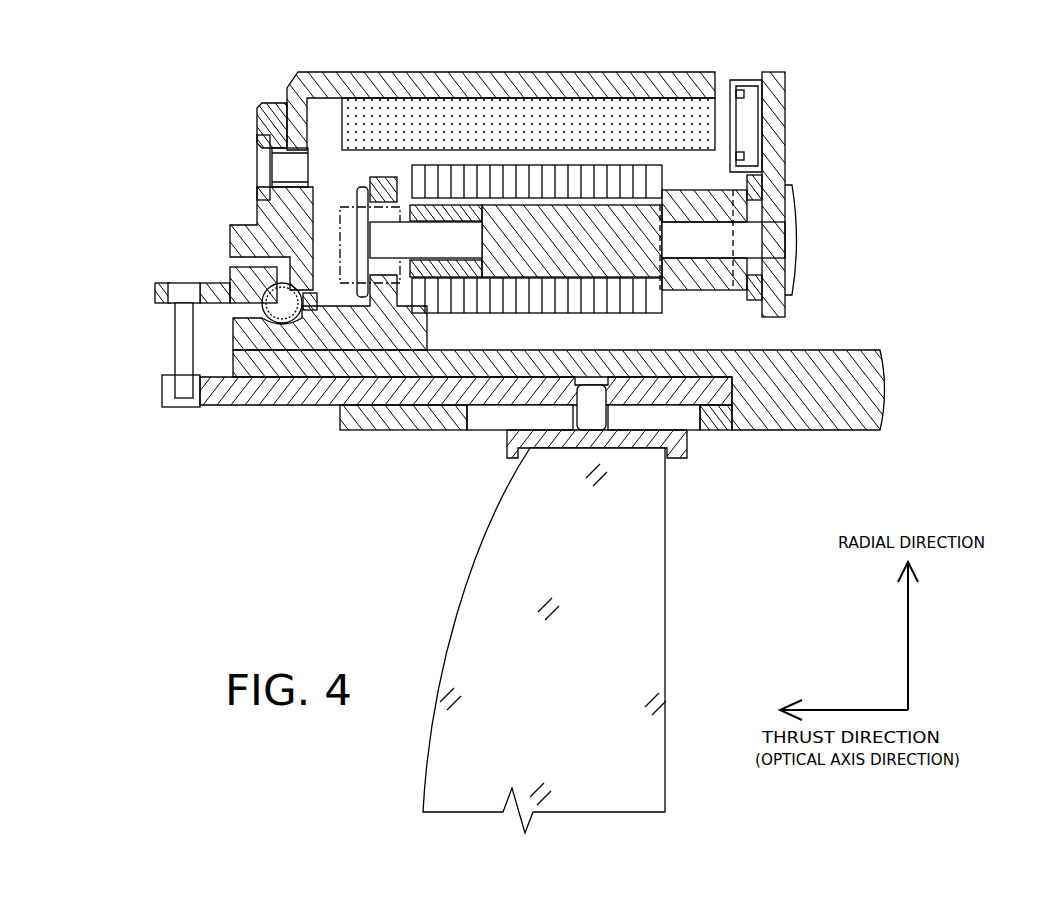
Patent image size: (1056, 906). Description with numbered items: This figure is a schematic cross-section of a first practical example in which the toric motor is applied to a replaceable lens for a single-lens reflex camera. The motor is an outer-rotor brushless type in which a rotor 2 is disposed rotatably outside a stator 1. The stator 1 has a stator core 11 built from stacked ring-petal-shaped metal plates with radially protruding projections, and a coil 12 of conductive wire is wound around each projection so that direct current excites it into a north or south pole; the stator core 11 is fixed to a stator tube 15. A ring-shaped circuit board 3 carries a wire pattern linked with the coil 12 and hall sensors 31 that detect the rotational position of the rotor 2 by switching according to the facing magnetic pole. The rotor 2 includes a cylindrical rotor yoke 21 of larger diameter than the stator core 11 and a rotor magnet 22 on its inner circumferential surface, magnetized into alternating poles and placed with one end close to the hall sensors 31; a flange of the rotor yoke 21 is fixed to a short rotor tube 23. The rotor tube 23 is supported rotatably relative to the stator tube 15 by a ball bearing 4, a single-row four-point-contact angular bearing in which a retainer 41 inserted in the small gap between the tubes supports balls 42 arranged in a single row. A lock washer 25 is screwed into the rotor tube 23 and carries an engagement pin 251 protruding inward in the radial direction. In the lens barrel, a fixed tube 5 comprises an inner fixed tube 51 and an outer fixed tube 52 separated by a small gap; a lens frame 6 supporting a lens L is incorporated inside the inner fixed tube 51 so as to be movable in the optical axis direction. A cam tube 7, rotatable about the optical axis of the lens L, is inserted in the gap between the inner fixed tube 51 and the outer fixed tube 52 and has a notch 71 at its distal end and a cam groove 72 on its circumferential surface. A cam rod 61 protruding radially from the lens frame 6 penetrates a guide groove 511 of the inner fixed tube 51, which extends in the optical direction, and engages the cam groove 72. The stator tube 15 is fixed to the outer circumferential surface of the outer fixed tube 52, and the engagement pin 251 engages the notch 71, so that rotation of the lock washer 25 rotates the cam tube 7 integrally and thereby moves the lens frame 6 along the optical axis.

The stator 1 is at (504, 419).
The rotor 2 is at (454, 201).
The rotor yoke 21 is at (478, 75).
The rotor magnet 22 is at (680, 120).
The rotor tube 23 is at (270, 122).
The lock washer 25 is at (236, 285).
The engagement pin 251 is at (180, 340).
The circuit board 3 is at (787, 170).
The hall sensor 31 is at (760, 122).
The stator core 11 is at (517, 300).
The coil 12 is at (348, 205).
The stator tube 15 is at (320, 338).
The ball bearing 4 is at (324, 359).
The retainer 41 is at (318, 300).
The ball 42 is at (262, 312).
The fixed tube 5 is at (559, 412).
The inner fixed tube 51 is at (536, 444).
The guide groove 511 is at (687, 415).
The outer fixed tube 52 is at (415, 365).
The lens frame 6 is at (601, 447).
The cam rod 61 is at (592, 418).
The cam tube 7 is at (429, 433).
The notch 71 is at (165, 397).
The cam groove 72 is at (573, 400).
The lens L is at (648, 740).